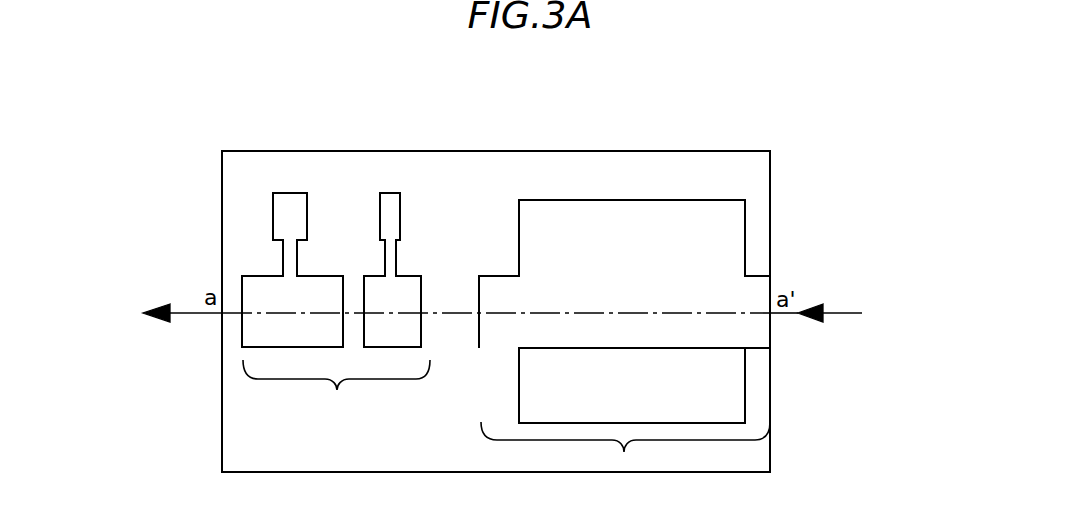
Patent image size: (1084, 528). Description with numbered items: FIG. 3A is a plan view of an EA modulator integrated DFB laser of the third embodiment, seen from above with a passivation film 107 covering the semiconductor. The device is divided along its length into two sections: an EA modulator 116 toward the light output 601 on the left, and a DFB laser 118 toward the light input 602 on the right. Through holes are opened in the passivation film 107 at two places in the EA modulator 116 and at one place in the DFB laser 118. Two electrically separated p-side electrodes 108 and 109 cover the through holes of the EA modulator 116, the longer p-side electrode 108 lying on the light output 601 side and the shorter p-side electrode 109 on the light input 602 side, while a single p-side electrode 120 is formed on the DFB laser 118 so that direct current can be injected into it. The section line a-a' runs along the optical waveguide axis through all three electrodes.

The passivation film 107 is at (720, 171).
The p-side electrode 108 is at (290, 201).
The p-side electrode 109 is at (391, 201).
The EA modulator 116 is at (336, 391).
The DFB laser 118 is at (624, 458).
The p-side electrode 120 is at (688, 228).
The light output 601 is at (168, 310).
The light input 602 is at (847, 316).